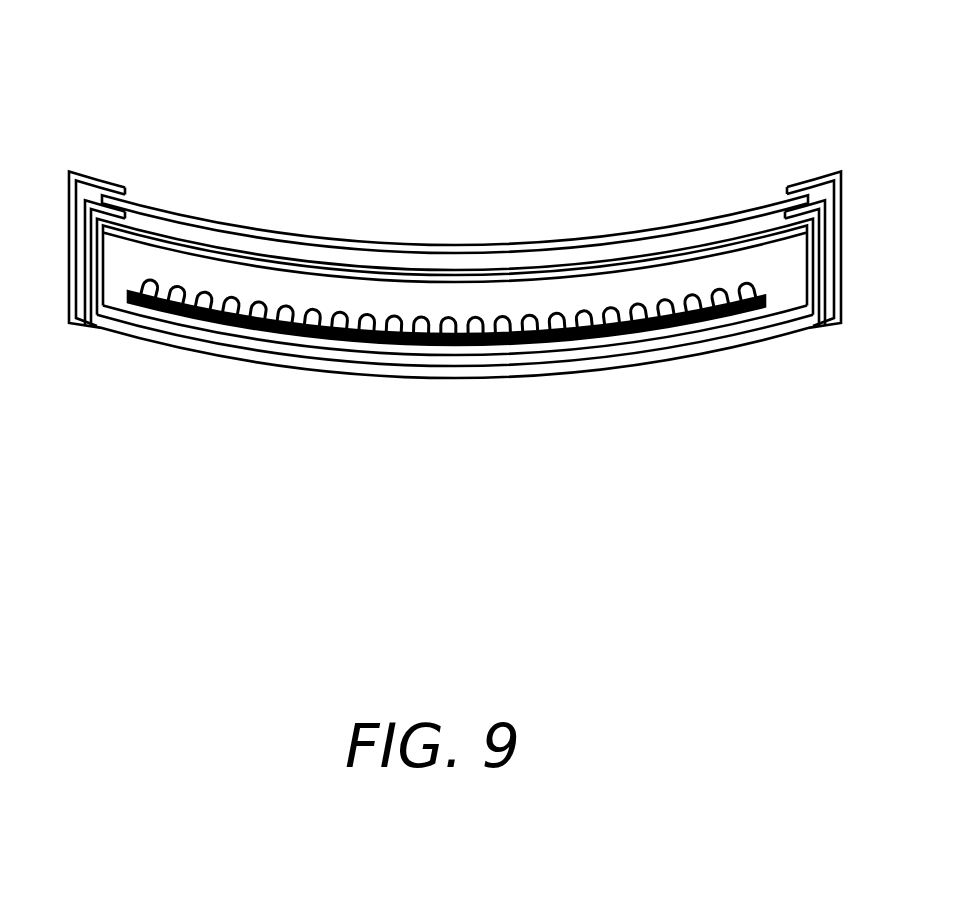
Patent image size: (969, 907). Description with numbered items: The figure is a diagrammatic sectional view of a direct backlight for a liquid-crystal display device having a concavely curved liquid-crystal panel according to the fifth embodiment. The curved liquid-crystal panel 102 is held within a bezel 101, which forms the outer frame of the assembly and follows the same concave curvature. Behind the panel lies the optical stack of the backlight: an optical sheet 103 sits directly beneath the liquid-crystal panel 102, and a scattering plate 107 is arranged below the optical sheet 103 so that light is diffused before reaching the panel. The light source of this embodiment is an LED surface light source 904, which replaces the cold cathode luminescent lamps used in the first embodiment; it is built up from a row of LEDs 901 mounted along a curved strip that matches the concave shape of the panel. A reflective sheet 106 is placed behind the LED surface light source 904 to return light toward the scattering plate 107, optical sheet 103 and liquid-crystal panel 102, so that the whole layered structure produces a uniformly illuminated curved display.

The bezel 101 is at (90, 177).
The liquid-crystal panel 102 is at (204, 220).
The optical sheet 103 is at (285, 262).
The scattering plate 107 is at (405, 280).
The reflective sheet 106 is at (548, 358).
The LED surface light source 904 is at (281, 330).
The LEDs 901 is at (542, 310).